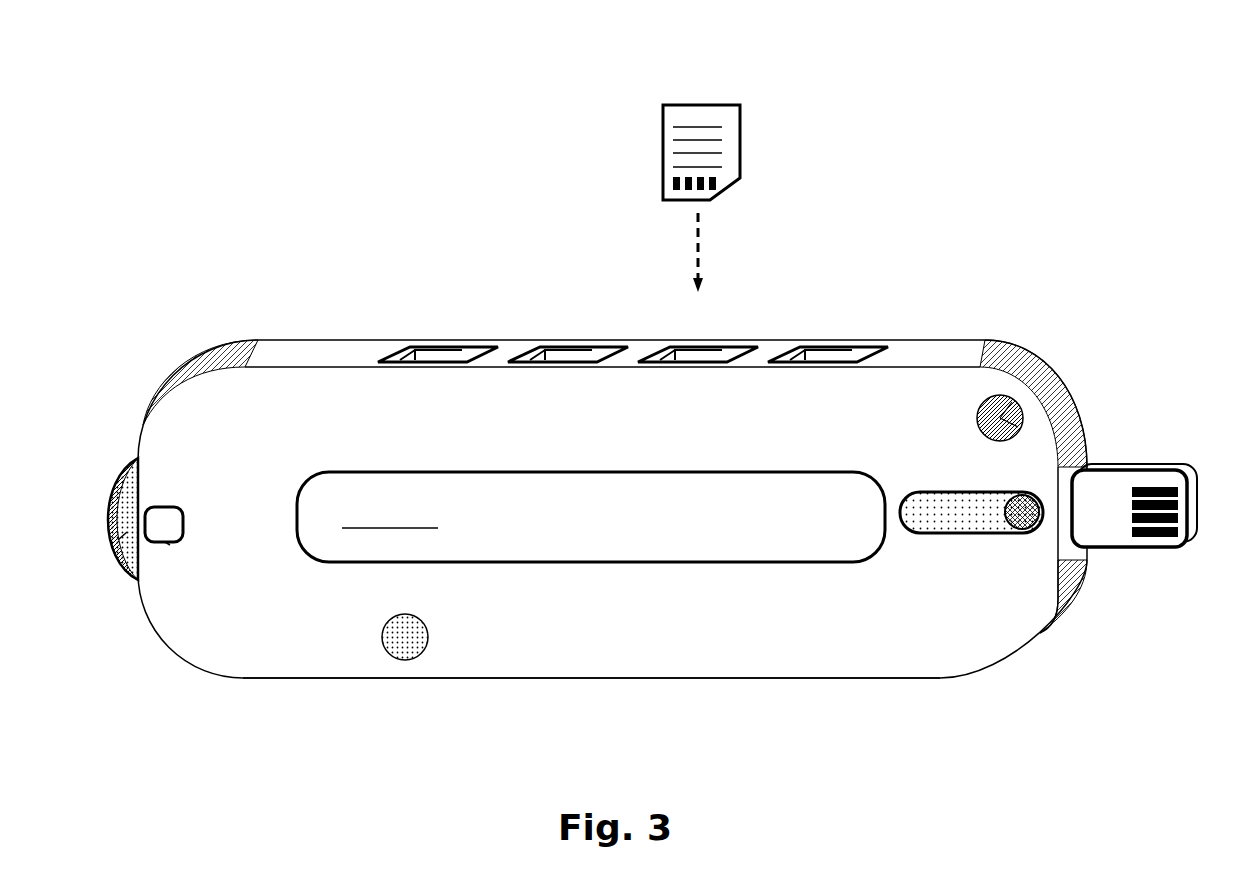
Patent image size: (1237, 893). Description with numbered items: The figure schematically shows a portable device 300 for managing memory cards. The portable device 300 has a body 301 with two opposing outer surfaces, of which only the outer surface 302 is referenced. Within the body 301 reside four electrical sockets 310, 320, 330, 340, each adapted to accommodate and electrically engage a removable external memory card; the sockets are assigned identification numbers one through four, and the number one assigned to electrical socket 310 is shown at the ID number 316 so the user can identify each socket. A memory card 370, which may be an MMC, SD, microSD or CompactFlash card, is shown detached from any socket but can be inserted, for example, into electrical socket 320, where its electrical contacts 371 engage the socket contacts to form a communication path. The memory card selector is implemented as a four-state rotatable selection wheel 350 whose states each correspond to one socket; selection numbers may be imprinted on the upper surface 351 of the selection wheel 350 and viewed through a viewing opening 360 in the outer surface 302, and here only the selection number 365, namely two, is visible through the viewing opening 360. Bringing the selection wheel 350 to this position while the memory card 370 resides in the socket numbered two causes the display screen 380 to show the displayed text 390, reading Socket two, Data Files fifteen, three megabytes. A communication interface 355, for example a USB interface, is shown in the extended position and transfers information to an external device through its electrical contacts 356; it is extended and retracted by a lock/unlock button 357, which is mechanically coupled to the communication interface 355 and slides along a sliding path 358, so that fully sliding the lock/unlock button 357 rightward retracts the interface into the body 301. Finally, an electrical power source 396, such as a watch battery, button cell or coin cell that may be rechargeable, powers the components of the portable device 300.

The portable device 300 is at (279, 162).
The body 301 is at (327, 680).
The outer surface 302 is at (829, 650).
The electrical socket 310 is at (820, 355).
The ID number 316 is at (833, 405).
The electrical socket 320 is at (697, 355).
The electrical socket 330 is at (567, 355).
The electrical socket 340 is at (437, 355).
The n-state rotatable selection wheel 350 is at (101, 455).
The upper surface 351 is at (127, 532).
The communication interface 355 is at (1137, 433).
The electrical contacts 356 is at (1170, 537).
The lock/unlock button 357 is at (1030, 533).
The sliding path 358 is at (935, 530).
The viewing opening 360 is at (165, 542).
The selection number 365 is at (183, 523).
The memory card 370 is at (741, 133).
The electrical contacts 371 is at (668, 172).
The display screen 380 is at (563, 573).
The displayed text 390 is at (352, 489).
The electrical power source 396 is at (425, 658).